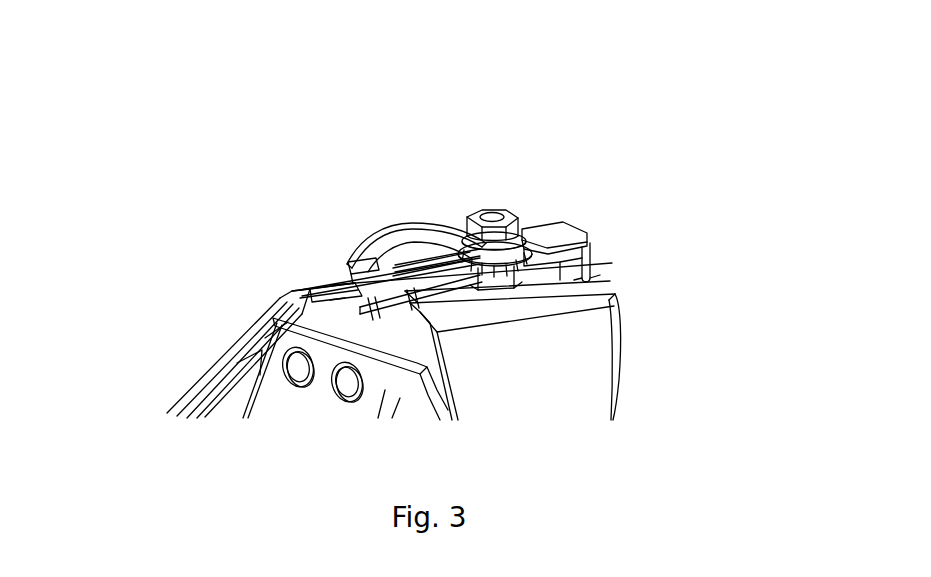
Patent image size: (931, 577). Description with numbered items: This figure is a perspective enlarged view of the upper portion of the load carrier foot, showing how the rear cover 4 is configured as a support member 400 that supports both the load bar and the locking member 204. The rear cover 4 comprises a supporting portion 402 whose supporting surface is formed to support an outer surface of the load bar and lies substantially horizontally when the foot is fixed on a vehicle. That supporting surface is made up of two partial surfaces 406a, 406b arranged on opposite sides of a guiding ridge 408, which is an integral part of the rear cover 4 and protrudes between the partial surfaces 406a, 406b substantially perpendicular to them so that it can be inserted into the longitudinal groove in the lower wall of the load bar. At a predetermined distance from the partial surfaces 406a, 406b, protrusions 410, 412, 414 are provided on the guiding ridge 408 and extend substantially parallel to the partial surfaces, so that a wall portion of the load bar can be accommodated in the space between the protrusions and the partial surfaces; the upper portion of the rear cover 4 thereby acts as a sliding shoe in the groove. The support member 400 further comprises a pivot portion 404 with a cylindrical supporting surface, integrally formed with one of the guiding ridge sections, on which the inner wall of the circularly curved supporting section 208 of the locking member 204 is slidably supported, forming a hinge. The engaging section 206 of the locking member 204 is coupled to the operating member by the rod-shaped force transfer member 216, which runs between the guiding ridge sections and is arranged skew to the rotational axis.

The rear cover 4 is at (648, 334).
The locking member 204 is at (482, 148).
The engaging section 206 is at (542, 262).
The supporting section 208 is at (396, 226).
The force transfer member 216 is at (503, 277).
The support member 400 is at (276, 199).
The supporting portion 402 is at (437, 294).
The pivot portion 404 is at (430, 237).
The partial surface 406a is at (405, 305).
The partial surface 406b is at (330, 290).
The guiding ridge 408 is at (602, 262).
The protrusion 410 is at (437, 275).
The protrusion 412 is at (357, 263).
The protrusion 414 is at (573, 238).